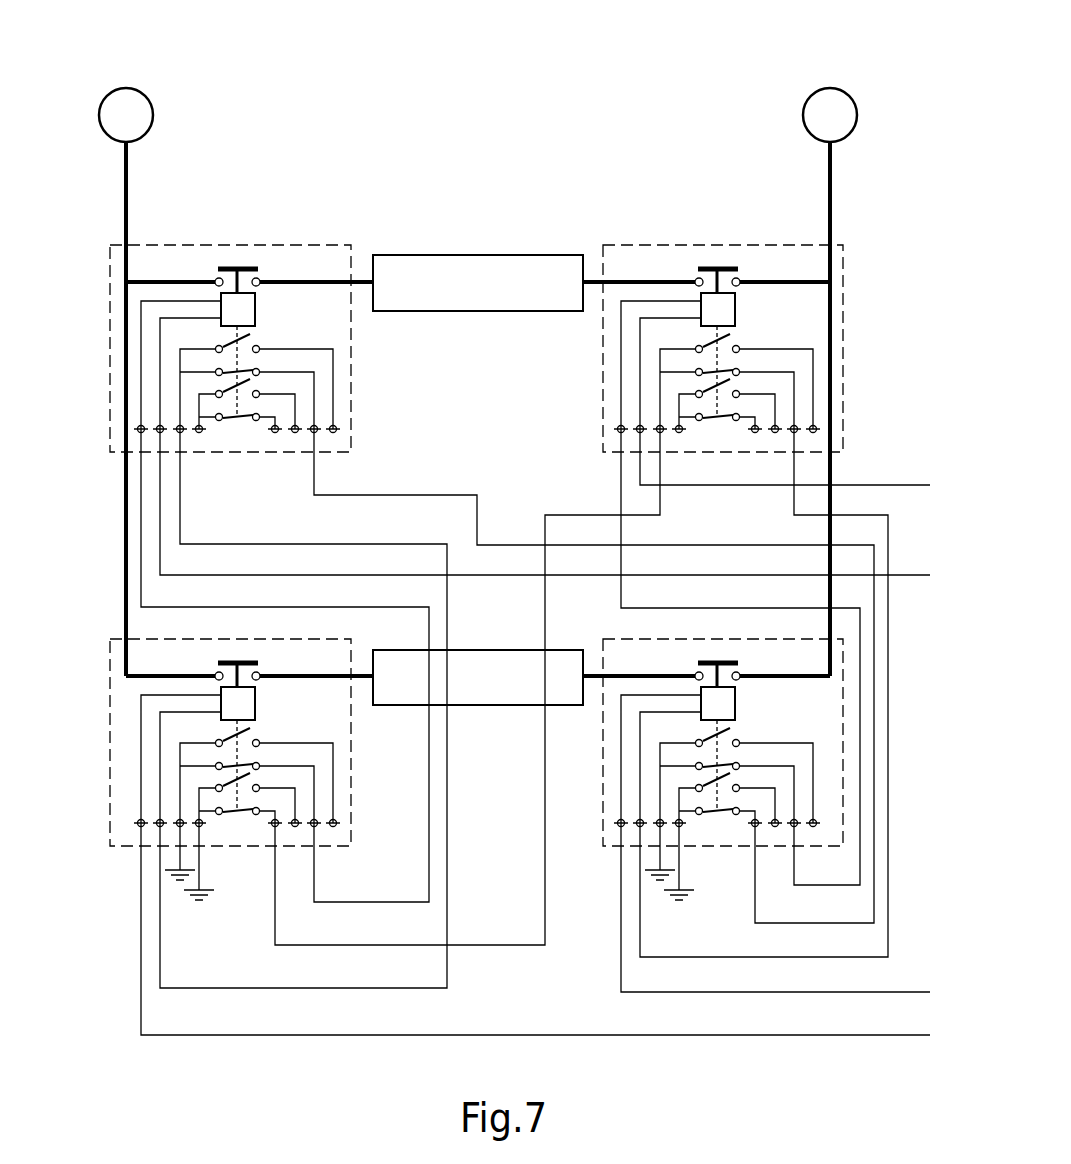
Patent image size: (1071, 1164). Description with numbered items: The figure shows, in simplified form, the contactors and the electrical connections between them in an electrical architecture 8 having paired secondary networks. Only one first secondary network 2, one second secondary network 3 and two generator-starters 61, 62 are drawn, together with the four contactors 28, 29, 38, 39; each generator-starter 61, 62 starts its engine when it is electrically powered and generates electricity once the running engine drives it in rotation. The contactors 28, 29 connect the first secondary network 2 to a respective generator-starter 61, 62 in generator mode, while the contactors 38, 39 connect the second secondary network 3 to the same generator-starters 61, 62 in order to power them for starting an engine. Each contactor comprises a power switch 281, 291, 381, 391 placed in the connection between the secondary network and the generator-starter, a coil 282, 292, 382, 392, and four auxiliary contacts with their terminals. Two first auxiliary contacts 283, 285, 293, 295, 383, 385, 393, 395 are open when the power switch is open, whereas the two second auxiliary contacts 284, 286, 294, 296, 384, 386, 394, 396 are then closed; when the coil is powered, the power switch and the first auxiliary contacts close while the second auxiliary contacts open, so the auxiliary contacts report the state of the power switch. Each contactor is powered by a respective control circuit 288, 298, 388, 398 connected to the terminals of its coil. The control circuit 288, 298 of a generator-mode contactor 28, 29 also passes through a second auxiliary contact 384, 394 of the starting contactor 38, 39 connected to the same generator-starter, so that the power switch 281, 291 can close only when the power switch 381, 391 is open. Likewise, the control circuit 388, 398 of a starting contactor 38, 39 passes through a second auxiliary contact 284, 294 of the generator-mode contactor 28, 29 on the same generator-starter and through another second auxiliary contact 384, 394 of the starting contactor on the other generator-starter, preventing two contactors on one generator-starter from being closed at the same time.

The first secondary network 2 is at (478, 255).
The second secondary network 3 is at (502, 650).
The electrical architecture 8 is at (89, 1004).
The contactor 28 is at (653, 245).
The contactor 29 is at (317, 245).
The contactor 38 is at (605, 846).
The contactor 39 is at (112, 648).
The generator-starter 61 is at (835, 88).
The generator-starter 62 is at (133, 88).
The power switch 281 is at (711, 221).
The coil 282 is at (813, 347).
The first auxiliary contact 283 is at (792, 369).
The second auxiliary contact 284 is at (647, 394).
The first auxiliary contact 285 is at (637, 404).
The second auxiliary contact 286 is at (717, 476).
The control circuit 288 is at (930, 485).
The power switch 291 is at (247, 267).
The coil 292 is at (243, 308).
The first auxiliary contact 293 is at (228, 342).
The second auxiliary contact 294 is at (234, 370).
The first auxiliary contact 295 is at (248, 381).
The second auxiliary contact 296 is at (244, 419).
The control circuit 298 is at (912, 573).
The power switch 381 is at (681, 665).
The coil 382 is at (760, 749).
The first auxiliary contact 383 is at (640, 775).
The second auxiliary contact 384 is at (631, 790).
The first auxiliary contact 385 is at (621, 808).
The second auxiliary contact 386 is at (717, 875).
The control circuit 388 is at (903, 992).
The power switch 391 is at (277, 666).
The coil 392 is at (277, 749).
The first auxiliary contact 393 is at (181, 772).
The second auxiliary contact 394 is at (172, 787).
The first auxiliary contact 395 is at (308, 786).
The second auxiliary contact 396 is at (237, 873).
The control circuit 398 is at (900, 1036).